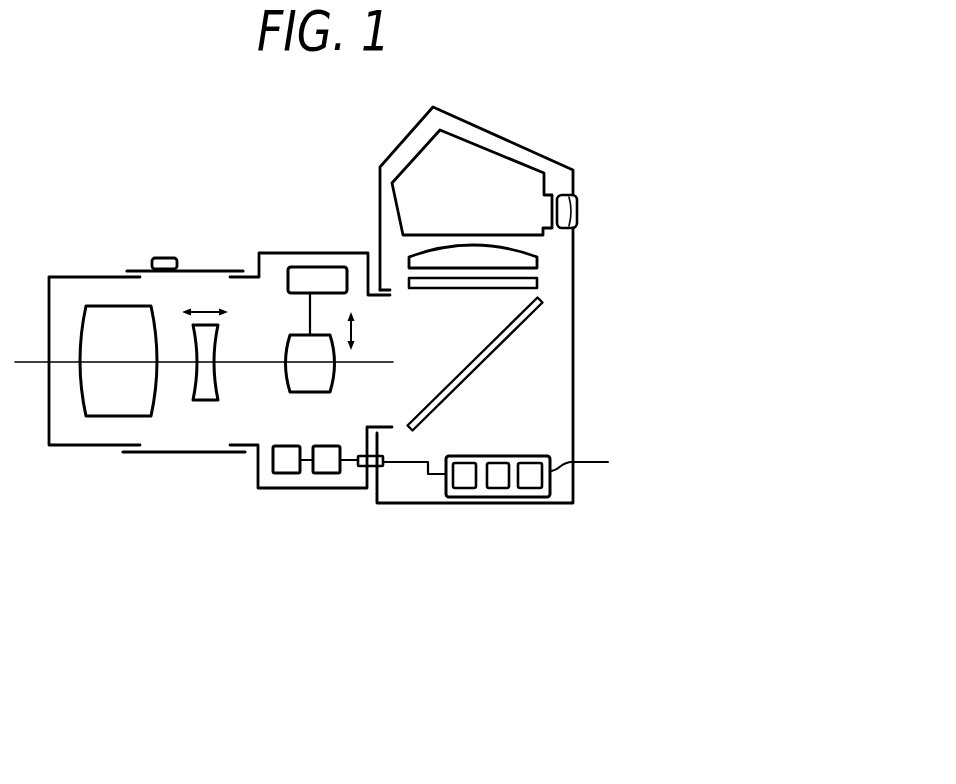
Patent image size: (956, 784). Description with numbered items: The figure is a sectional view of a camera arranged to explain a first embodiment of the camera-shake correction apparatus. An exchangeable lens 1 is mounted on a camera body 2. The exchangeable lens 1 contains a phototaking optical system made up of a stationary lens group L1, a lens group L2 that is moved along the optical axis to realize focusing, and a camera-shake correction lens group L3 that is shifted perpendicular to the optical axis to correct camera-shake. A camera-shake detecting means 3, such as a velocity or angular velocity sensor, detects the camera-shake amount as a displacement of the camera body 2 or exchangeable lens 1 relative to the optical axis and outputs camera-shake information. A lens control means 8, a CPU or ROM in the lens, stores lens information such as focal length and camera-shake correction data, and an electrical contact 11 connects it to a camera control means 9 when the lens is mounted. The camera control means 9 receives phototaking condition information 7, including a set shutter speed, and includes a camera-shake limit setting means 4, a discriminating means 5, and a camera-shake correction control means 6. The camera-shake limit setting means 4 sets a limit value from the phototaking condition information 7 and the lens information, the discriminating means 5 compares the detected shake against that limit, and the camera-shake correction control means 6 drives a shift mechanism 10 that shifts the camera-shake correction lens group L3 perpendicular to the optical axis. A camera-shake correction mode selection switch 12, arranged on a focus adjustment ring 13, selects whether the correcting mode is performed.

The exchangeable lens 1 is at (165, 191).
The camera body 2 is at (530, 136).
The camera-shake detecting means 3 is at (280, 467).
The camera-shake limit setting means 4 is at (465, 488).
The discriminating means 5 is at (500, 488).
The camera-shake correction control means 6 is at (535, 488).
The phototaking condition information 7 is at (532, 448).
The lens control means 8 is at (327, 468).
The camera control means 9 is at (589, 463).
The shift mechanism 10 is at (307, 276).
The electrical contact 11 is at (362, 466).
The camera-shake correction mode selection switch 12 is at (158, 258).
The focus adjustment ring 13 is at (213, 270).
The stationary lens group L1 is at (105, 313).
The focusing lens group L2 is at (207, 399).
The camera-shake correction lens group L3 is at (302, 386).